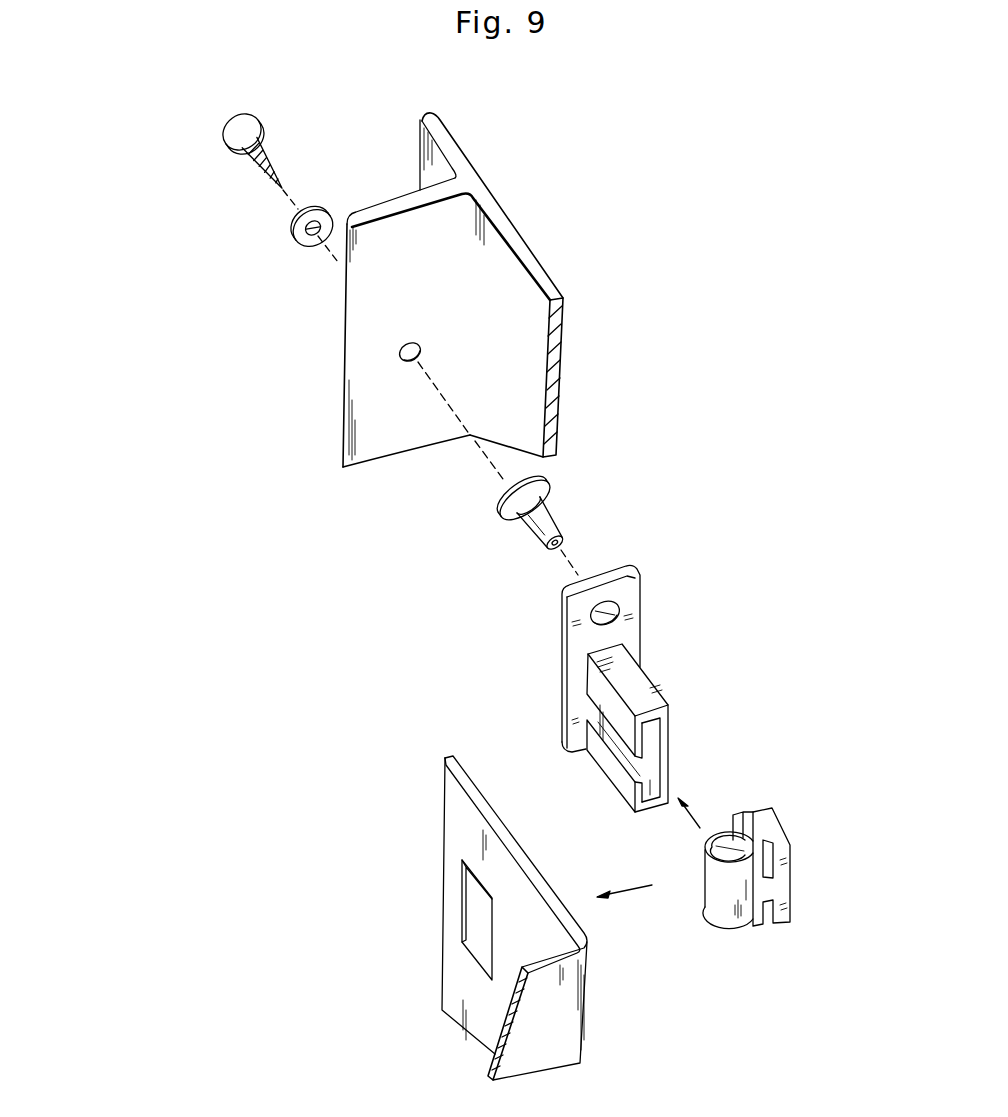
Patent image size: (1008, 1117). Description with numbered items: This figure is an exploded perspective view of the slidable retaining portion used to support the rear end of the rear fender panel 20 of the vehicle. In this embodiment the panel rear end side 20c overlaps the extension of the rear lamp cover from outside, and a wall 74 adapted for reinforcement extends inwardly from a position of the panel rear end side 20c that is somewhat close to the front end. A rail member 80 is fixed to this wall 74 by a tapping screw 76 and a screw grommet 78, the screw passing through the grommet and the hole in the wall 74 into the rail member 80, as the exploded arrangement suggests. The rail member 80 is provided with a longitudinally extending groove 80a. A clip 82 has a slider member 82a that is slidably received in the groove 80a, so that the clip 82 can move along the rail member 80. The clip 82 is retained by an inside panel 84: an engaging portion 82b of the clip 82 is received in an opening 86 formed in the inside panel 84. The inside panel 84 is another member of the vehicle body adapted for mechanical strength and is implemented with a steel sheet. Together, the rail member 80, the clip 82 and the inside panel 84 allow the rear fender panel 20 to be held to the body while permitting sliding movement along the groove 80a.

The rear fender panel 20 is at (478, 290).
The panel rear end side 20c is at (450, 143).
The wall 74 is at (382, 237).
The tapping screw 76 is at (262, 122).
The screw grommet 78 is at (560, 513).
The rail member 80 is at (598, 688).
The groove 80a is at (600, 720).
The clip 82 is at (781, 868).
The slider member 82a is at (783, 880).
The engaging portion 82b is at (733, 922).
The inside panel 84 is at (478, 918).
The opening 86 is at (480, 905).